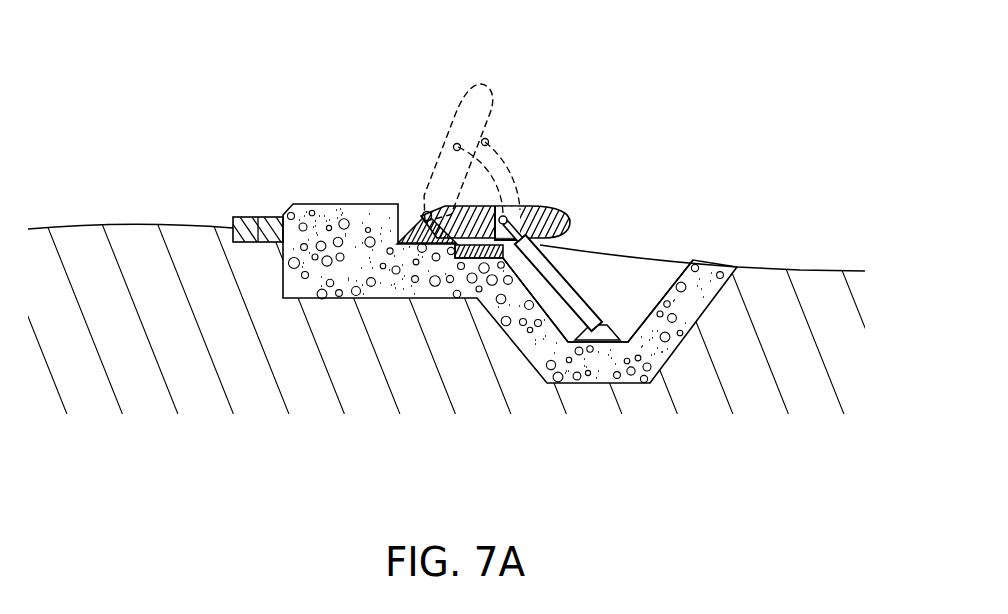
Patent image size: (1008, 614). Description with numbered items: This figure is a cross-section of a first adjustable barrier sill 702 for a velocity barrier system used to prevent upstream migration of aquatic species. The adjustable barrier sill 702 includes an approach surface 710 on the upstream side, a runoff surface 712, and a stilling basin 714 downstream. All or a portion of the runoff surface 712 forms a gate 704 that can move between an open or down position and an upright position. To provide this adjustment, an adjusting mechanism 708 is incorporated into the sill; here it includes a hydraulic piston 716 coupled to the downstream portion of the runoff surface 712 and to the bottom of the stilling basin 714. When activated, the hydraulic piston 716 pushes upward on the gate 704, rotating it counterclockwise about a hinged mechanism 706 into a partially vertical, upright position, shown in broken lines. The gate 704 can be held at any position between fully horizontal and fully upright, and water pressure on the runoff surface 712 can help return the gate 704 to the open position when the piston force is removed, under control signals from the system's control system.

The adjustable barrier sill 702 is at (218, 112).
The gate 704 is at (465, 123).
The hinged mechanism 706 is at (424, 212).
The adjusting mechanism 708 is at (608, 283).
The approach surface 710 is at (229, 217).
The runoff surface 712 is at (551, 215).
The stilling basin 714 is at (642, 300).
The hydraulic piston 716 is at (578, 307).